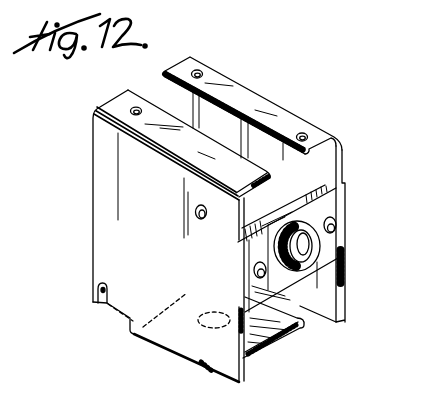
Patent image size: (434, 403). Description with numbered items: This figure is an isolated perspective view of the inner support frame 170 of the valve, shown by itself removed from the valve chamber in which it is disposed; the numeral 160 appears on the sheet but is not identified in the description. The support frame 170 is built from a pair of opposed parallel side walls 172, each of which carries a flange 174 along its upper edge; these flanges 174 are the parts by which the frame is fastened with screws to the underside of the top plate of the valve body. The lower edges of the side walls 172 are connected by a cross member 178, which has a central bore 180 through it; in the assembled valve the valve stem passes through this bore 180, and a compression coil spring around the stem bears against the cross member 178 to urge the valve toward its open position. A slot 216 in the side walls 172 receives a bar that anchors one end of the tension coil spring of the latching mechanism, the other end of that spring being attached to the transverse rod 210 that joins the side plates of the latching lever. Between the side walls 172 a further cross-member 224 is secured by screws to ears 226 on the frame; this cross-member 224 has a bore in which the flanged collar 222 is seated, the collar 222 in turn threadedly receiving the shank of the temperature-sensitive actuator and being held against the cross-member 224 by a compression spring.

The mounting assembly 160 is at (15, 136).
The inner support frame 170 is at (106, 183).
The side walls 172 is at (103, 257).
The flanges 174 is at (124, 97).
The cross member 178 is at (277, 338).
The central bore 180 is at (213, 311).
The transverse rod 210 is at (178, 400).
The slot 216 is at (102, 304).
The flanged collar 222 is at (313, 214).
The cross-member 224 is at (345, 168).
The ears 226 is at (256, 262).